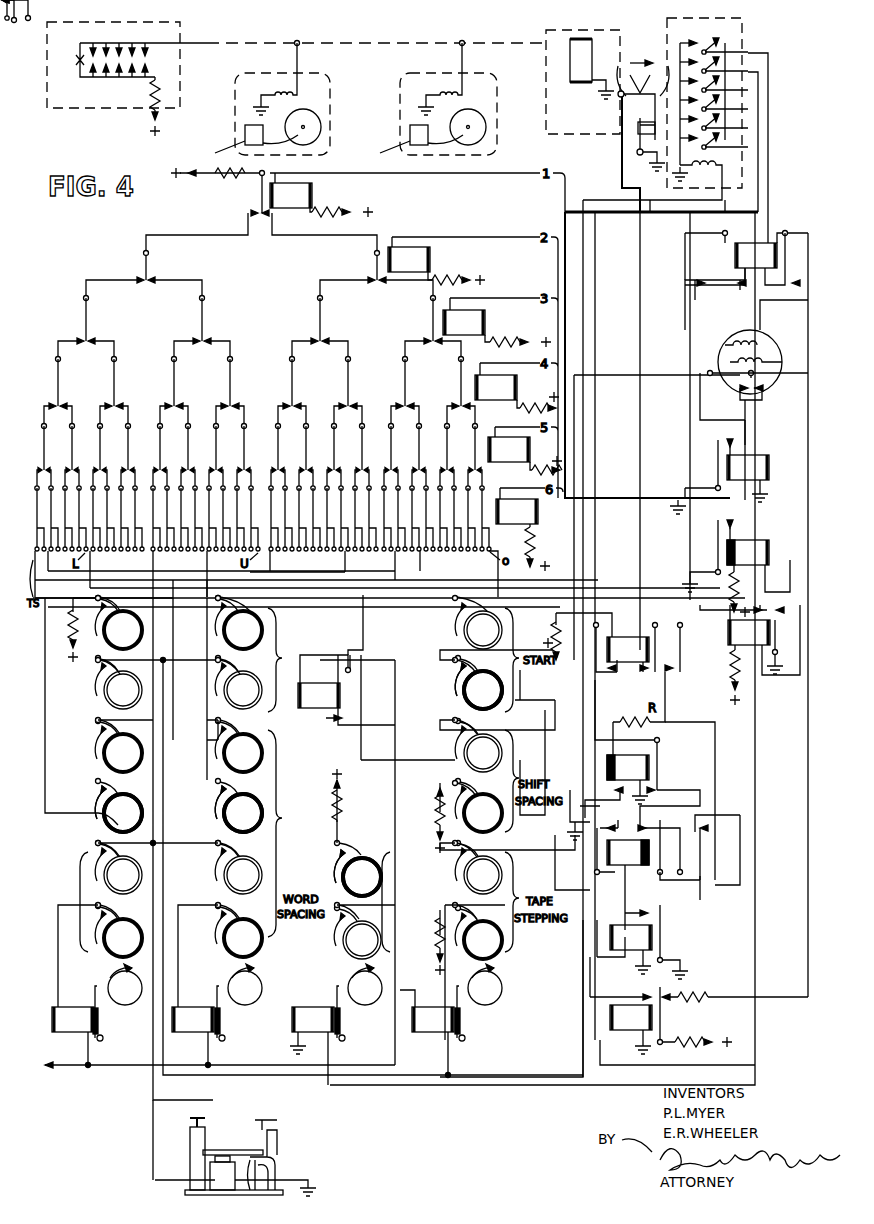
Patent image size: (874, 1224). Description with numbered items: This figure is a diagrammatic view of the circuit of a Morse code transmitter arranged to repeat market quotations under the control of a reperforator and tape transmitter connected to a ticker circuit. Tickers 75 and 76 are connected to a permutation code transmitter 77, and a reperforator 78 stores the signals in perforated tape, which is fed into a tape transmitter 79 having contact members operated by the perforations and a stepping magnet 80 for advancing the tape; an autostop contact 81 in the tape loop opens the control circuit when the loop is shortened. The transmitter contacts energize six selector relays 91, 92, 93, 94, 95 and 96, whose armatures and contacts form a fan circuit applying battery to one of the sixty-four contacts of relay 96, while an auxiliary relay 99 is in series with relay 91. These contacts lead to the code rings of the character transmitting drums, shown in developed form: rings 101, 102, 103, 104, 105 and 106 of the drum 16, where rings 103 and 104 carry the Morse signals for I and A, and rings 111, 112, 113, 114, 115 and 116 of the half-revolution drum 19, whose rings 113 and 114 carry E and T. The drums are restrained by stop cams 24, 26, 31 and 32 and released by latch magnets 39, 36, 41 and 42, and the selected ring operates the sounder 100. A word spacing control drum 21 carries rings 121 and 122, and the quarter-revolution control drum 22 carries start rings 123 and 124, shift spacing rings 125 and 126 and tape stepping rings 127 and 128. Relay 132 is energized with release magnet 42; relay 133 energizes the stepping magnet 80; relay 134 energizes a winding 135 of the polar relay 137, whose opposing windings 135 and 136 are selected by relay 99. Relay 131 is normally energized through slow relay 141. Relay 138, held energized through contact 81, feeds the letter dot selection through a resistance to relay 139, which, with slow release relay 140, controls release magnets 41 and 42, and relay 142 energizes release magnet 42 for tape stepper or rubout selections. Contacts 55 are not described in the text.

The permutation code transmitter 77 is at (180, 40).
The ticker 75 is at (300, 75).
The ticker 76 is at (468, 75).
The reperforator 78 is at (546, 36).
The tape transmitter 79 is at (742, 33).
The stepping magnet 80 is at (697, 174).
The autostop contact 81 is at (643, 118).
The selector relay 91 is at (311, 196).
The selector relay 92 is at (424, 262).
The selector relay 93 is at (485, 325).
The selector relay 94 is at (515, 389).
The selector relay 95 is at (528, 451).
The selector relay 96 is at (533, 514).
The auxiliary relay 99 is at (748, 250).
The relay 131 is at (727, 628).
The relay 132 is at (652, 930).
The relay 133 is at (652, 1018).
The relay 134 is at (745, 460).
The winding 135 is at (768, 345).
The winding 136 is at (738, 345).
The polar relay 137 is at (730, 388).
The relay 138 is at (627, 640).
The relay 139 is at (650, 766).
The slow release relay 140 is at (630, 864).
The slow relay 141 is at (760, 548).
The relay 142 is at (310, 700).
The contact 55 is at (90, 598).
The contact ring 111 is at (143, 632).
The contact ring 112 is at (100, 691).
The contact ring 113 is at (100, 754).
The contact ring 114 is at (107, 826).
The contact ring 115 is at (107, 886).
The contact ring 116 is at (100, 943).
The contact ring 101 is at (225, 640).
The contact ring 102 is at (225, 686).
The contact ring 103 is at (225, 746).
The contact ring 104 is at (226, 826).
The contact ring 105 is at (224, 886).
The contact ring 106 is at (224, 943).
The contact ring 121 is at (343, 878).
The contact ring 122 is at (340, 941).
The contact ring 123 is at (462, 632).
The contact ring 124 is at (503, 700).
The contact ring 125 is at (462, 756).
The contact ring 126 is at (503, 822).
The contact ring 127 is at (462, 878).
The contact ring 128 is at (462, 943).
The character transmitting drum 19 is at (76, 810).
The character transmitting drum 16 is at (197, 810).
The control drum 21 is at (369, 838).
The control drum 22 is at (445, 698).
The cam wheel 24 is at (128, 996).
The stop cam 26 is at (246, 996).
The stop cam 31 is at (366, 996).
The stop cam 32 is at (486, 996).
The latch magnet 39 is at (72, 1023).
The latch magnet 36 is at (192, 1023).
The latch magnet 41 is at (315, 1023).
The latch magnet 42 is at (435, 1023).
The sounder 100 is at (277, 1162).